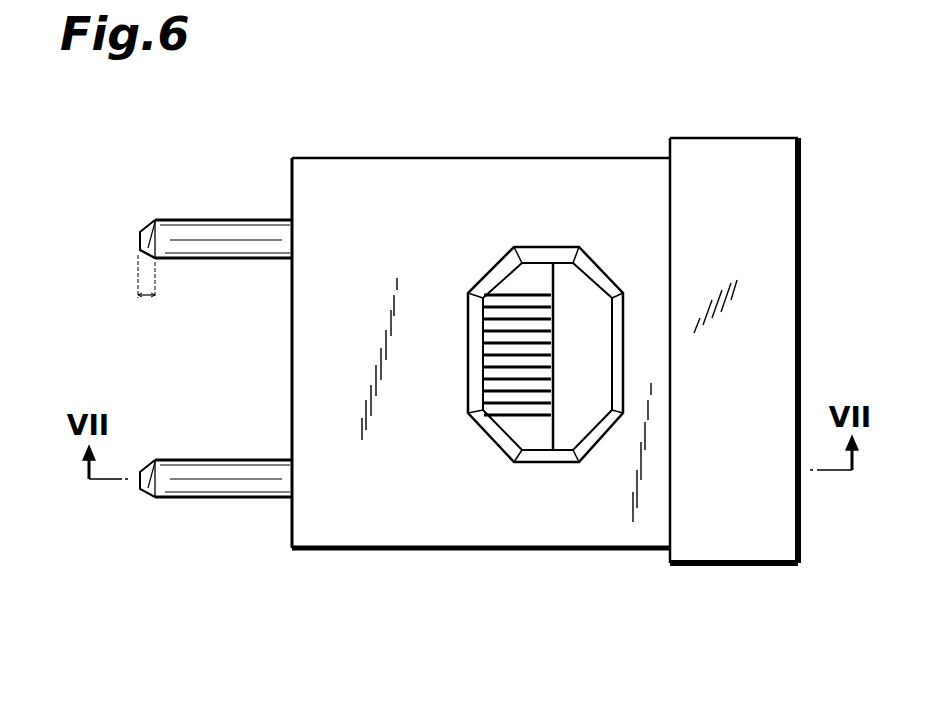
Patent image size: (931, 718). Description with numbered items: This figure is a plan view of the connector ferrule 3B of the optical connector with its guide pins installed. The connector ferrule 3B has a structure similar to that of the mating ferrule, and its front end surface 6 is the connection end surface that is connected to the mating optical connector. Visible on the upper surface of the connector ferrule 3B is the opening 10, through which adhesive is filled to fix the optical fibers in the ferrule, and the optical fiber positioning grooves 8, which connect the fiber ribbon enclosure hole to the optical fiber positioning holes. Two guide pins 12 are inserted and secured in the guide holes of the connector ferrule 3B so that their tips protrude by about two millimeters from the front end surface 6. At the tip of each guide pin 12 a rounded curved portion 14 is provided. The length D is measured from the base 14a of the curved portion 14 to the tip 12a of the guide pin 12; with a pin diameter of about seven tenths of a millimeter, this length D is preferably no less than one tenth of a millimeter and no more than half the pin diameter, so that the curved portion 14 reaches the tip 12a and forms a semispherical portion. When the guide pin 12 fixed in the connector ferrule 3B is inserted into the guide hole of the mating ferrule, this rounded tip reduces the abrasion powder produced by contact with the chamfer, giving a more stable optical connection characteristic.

The front end surface 6 is at (292, 333).
The connector ferrule 3B is at (745, 138).
The optical fiber positioning grooves 8 is at (540, 298).
The opening 10 is at (528, 438).
The guide pin 12 is at (218, 230).
The curved portion 14 is at (146, 232).
The tip of guide pin 12a is at (137, 240).
The base of curved portion 14a is at (147, 260).
The length from base of curved portion to tip D is at (147, 294).